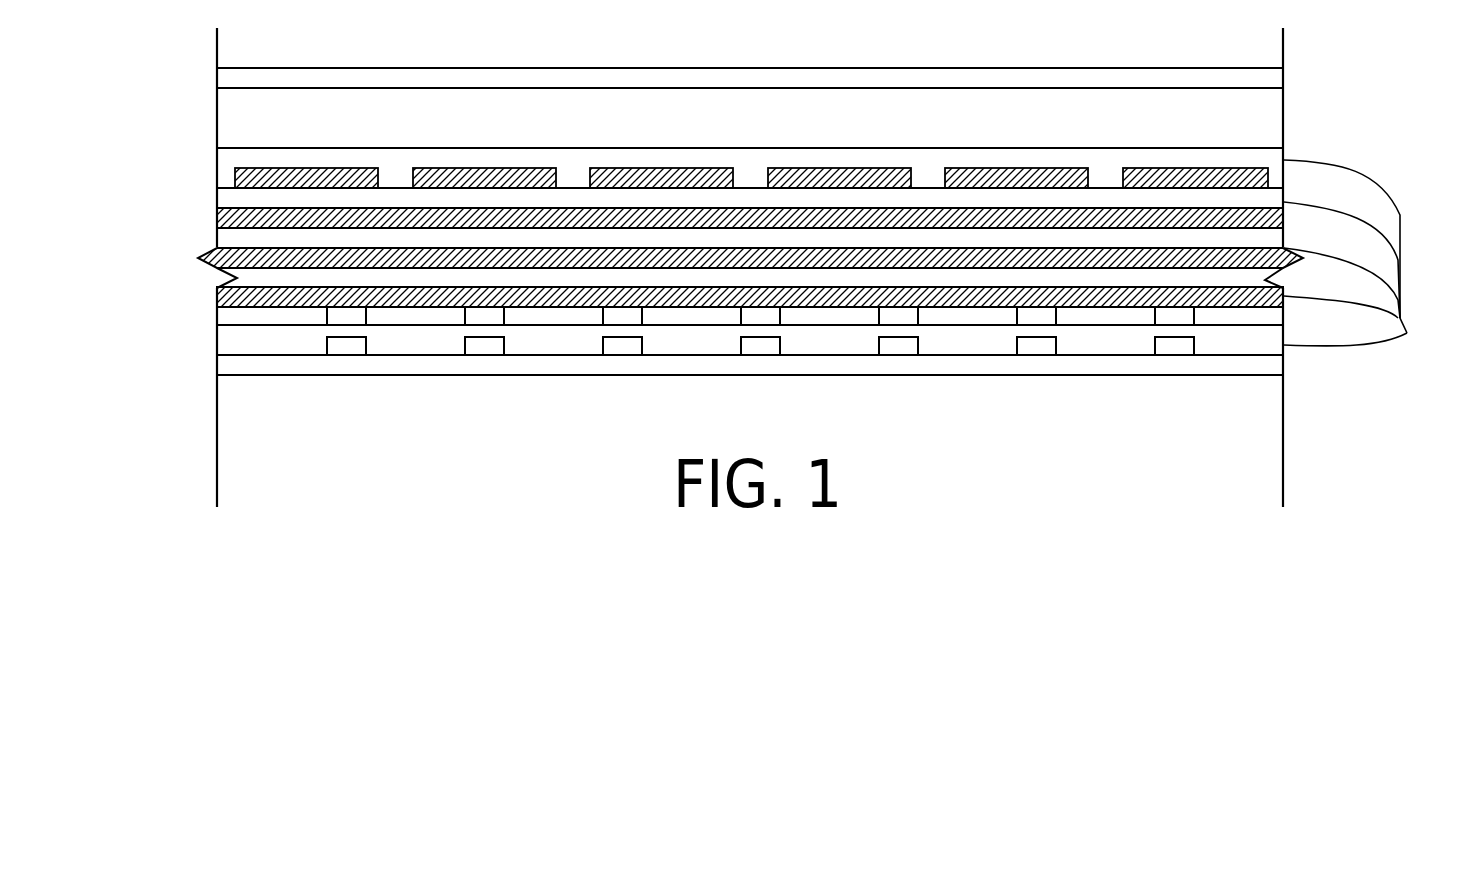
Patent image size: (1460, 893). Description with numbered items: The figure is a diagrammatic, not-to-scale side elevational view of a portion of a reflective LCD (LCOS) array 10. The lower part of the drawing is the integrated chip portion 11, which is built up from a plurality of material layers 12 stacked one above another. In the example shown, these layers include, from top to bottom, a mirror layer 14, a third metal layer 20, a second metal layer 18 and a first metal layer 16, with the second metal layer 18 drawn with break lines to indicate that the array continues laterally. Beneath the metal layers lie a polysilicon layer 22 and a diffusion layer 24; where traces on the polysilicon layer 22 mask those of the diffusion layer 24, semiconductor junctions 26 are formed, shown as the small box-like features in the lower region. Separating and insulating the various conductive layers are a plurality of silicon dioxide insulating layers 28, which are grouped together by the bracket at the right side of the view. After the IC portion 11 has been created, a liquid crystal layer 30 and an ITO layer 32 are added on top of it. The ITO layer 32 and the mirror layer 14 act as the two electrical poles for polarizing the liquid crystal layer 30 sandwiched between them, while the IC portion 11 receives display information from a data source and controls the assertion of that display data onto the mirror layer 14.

The reflective LCD array 10 is at (1187, 463).
The integrated chip portion 11 is at (738, 161).
The material layers 12 is at (734, 324).
The mirror layer 14 is at (1276, 176).
The first metal (M1) layer 16 is at (1284, 300).
The second metal (M2) layer 18 is at (1300, 262).
The third metal (M3) layer 20 is at (1284, 212).
The polysilicon layer 22 is at (706, 379).
The diffusion layer 24 is at (345, 347).
The semiconductor junctions 26 is at (354, 316).
The silicon dioxide insulating layers 28 is at (1367, 255).
The liquid crystal layer 30 is at (1270, 121).
The ITO layer 32 is at (1270, 80).